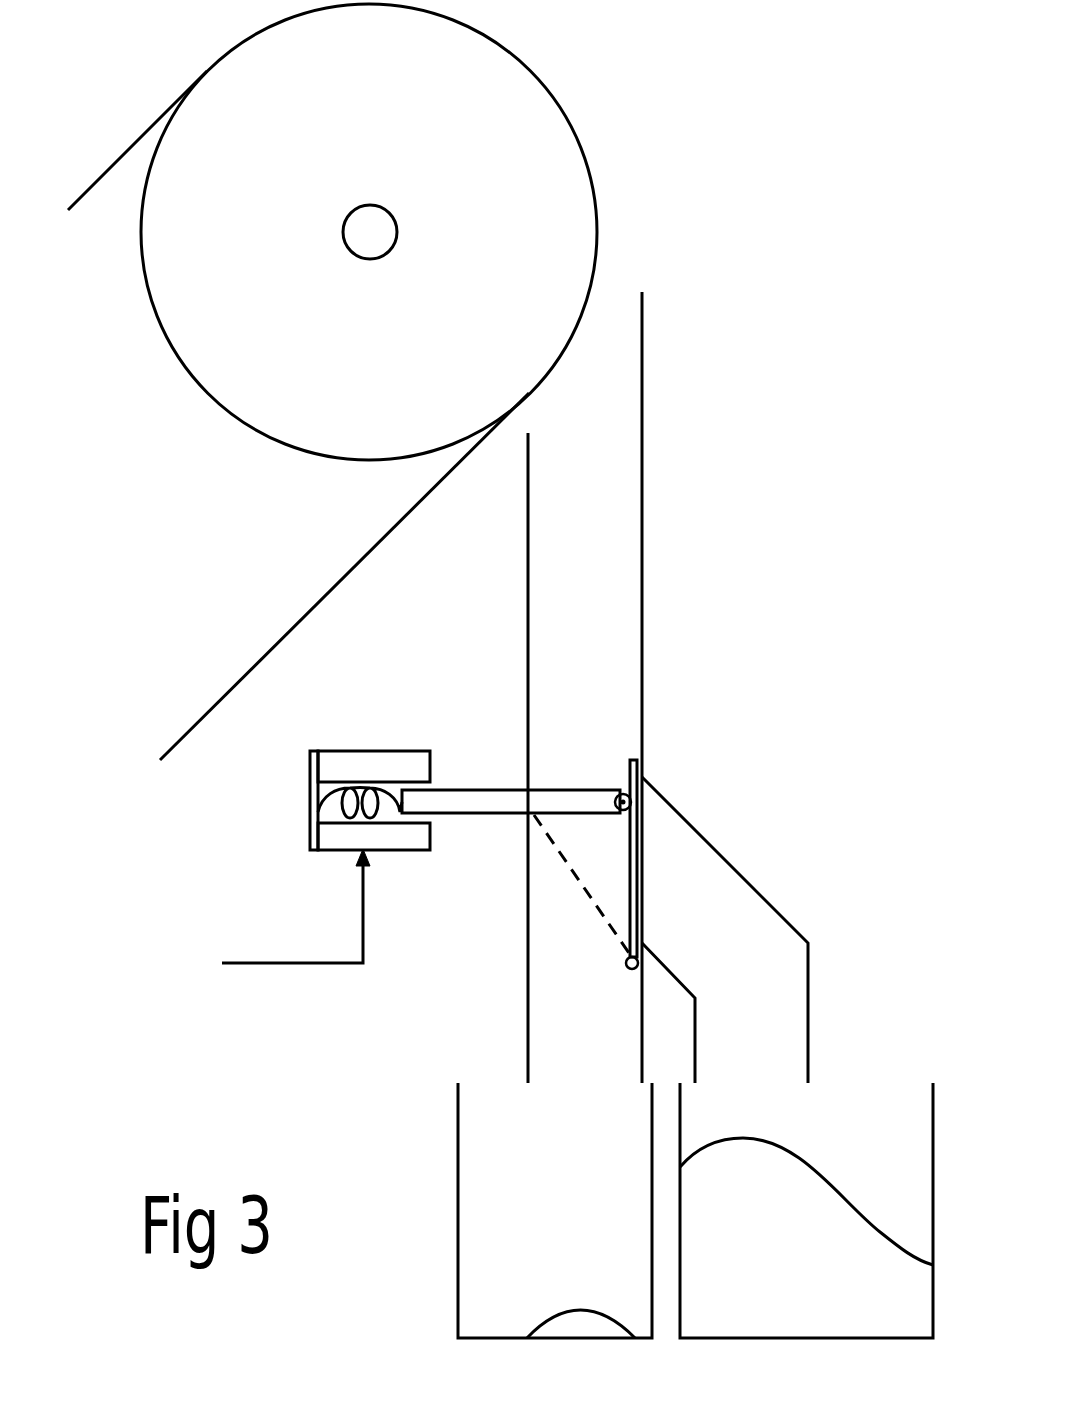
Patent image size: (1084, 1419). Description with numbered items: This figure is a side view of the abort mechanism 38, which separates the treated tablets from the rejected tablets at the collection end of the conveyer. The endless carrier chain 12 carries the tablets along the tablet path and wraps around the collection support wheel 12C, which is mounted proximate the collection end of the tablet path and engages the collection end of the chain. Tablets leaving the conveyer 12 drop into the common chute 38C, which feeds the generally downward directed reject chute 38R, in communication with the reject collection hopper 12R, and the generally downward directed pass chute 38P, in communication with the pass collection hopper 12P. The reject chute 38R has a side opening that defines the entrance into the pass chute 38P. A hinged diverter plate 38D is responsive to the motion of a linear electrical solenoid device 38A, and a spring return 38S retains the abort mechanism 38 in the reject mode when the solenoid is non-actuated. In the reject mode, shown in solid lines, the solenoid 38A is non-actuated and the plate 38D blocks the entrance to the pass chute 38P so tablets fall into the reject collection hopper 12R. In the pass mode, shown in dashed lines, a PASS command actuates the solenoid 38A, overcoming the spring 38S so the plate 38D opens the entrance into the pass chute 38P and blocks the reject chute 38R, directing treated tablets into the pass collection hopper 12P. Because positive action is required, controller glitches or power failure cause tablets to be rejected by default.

The endless carrier chain 12 is at (83, 205).
The collection support wheel 12C is at (193, 360).
The abort mechanism 38 is at (762, 612).
The common chute 38C is at (645, 540).
The reject chute 38R is at (548, 1020).
The pass chute 38P is at (745, 908).
The hinged plate 38D is at (628, 772).
The linear electrical solenoid device 38A is at (364, 750).
The spring return 38S is at (320, 788).
The reject collection hopper 12R is at (462, 1277).
The pass collection hopper 12P is at (682, 1272).